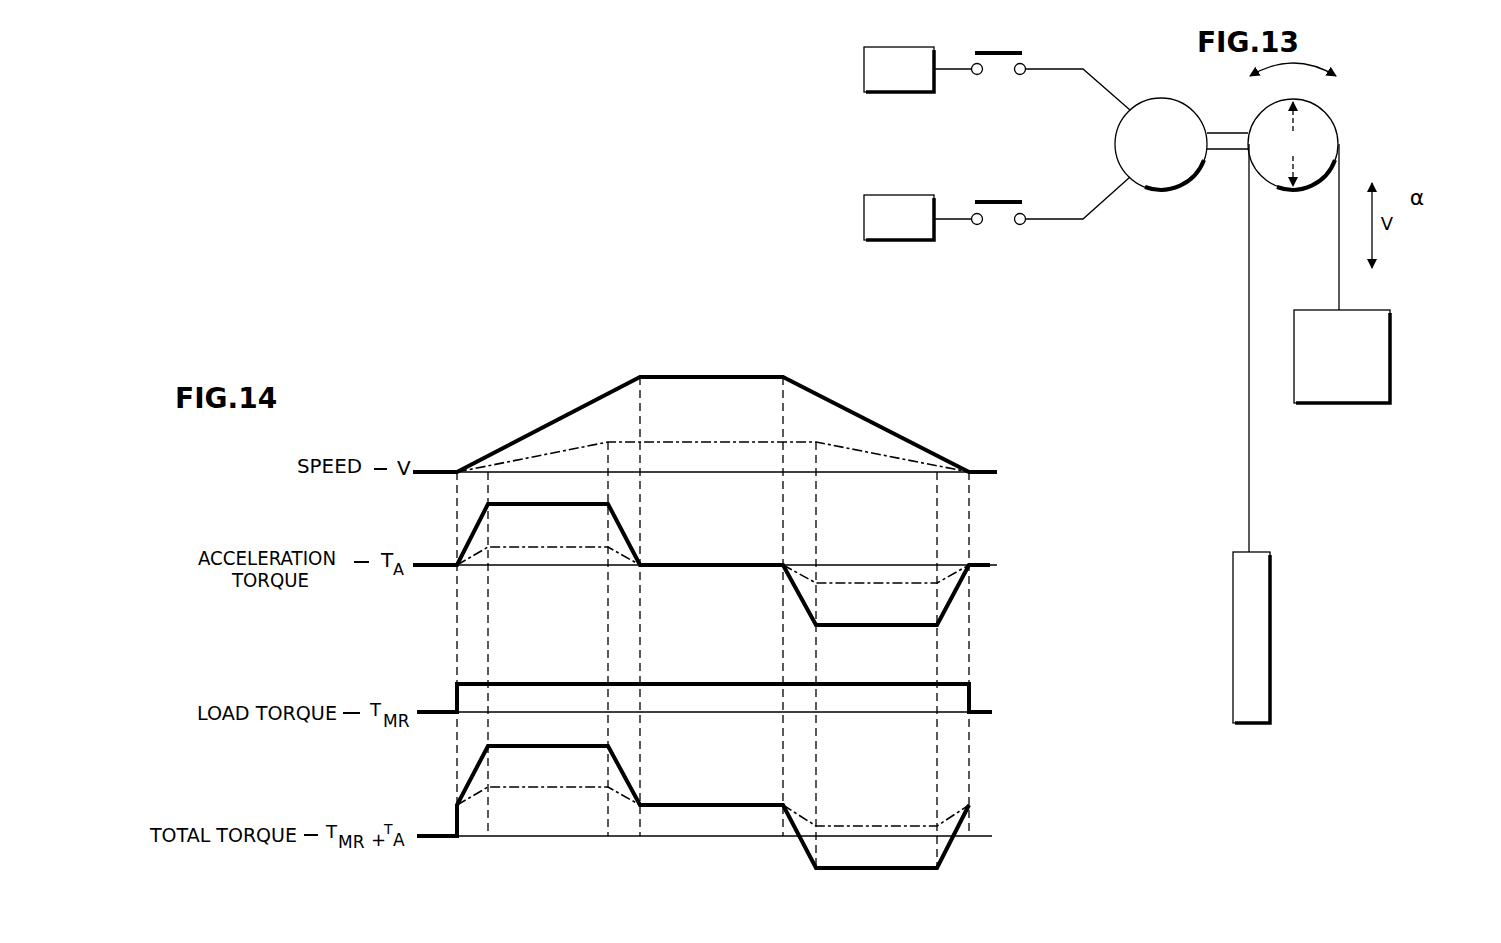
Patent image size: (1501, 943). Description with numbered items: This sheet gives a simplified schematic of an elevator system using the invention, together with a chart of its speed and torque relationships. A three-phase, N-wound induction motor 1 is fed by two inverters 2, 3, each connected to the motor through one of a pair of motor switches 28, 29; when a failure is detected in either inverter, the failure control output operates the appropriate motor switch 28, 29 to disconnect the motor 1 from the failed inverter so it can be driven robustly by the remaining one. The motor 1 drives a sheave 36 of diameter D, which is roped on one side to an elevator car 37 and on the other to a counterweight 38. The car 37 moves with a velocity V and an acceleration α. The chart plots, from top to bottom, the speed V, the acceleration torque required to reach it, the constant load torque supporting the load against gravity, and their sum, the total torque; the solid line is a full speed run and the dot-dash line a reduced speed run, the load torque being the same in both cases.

The induction motor 1 is at (1170, 190).
The inverter 2 is at (888, 46).
The inverter 3 is at (888, 194).
The motor switch 28 is at (992, 51).
The motor switch 29 is at (992, 200).
The sheave 36 is at (1338, 127).
The elevator car 37 is at (1382, 312).
The counterweight 38 is at (1257, 552).